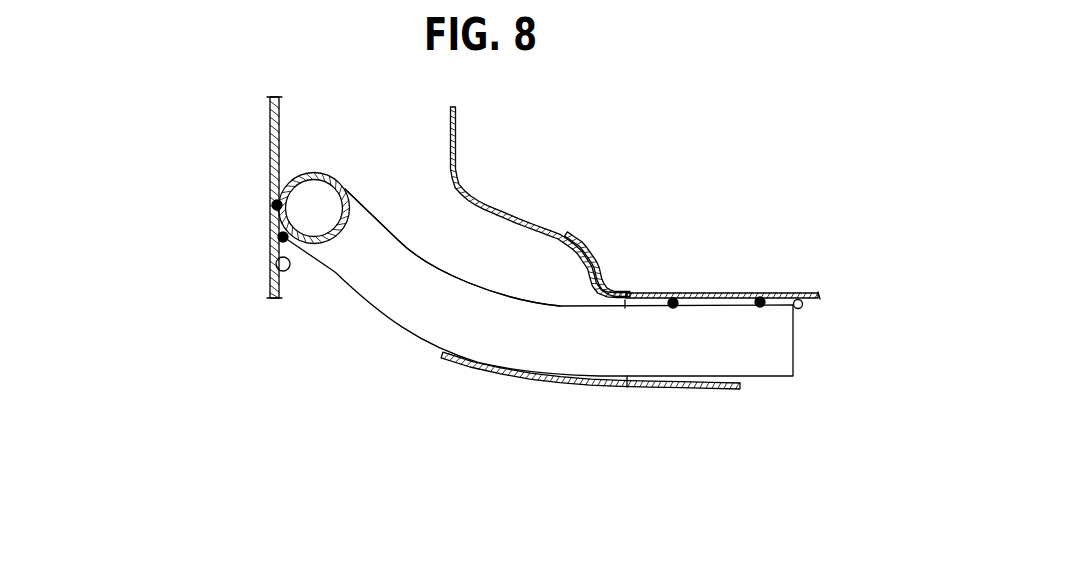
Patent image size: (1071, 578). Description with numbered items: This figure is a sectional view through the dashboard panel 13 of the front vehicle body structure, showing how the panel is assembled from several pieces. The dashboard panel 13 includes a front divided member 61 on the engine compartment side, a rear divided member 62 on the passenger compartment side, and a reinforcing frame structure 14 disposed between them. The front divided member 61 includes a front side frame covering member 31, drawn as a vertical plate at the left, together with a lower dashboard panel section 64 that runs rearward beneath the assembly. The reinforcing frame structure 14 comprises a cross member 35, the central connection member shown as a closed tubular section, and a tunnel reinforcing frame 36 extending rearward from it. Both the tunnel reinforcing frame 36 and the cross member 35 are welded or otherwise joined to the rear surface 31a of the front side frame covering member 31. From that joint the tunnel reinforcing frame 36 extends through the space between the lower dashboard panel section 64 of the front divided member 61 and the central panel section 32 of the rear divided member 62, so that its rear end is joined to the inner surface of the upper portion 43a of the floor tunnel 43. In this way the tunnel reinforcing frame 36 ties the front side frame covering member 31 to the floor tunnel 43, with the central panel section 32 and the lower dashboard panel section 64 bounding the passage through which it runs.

The dashboard panel 13 is at (238, 73).
The front side frame covering member 31 is at (272, 173).
The rear surface 31a is at (276, 260).
The front divided member 61 is at (237, 198).
The cross member 35 is at (322, 173).
The tunnel reinforcing frame 36 is at (358, 298).
The reinforcing frame structure 14 is at (363, 333).
The central panel section 32 is at (515, 218).
The rear divided member 62 is at (560, 217).
The floor tunnel 43 is at (702, 292).
The upper portion 43a is at (797, 299).
The lower dashboard panel section 64 is at (493, 380).